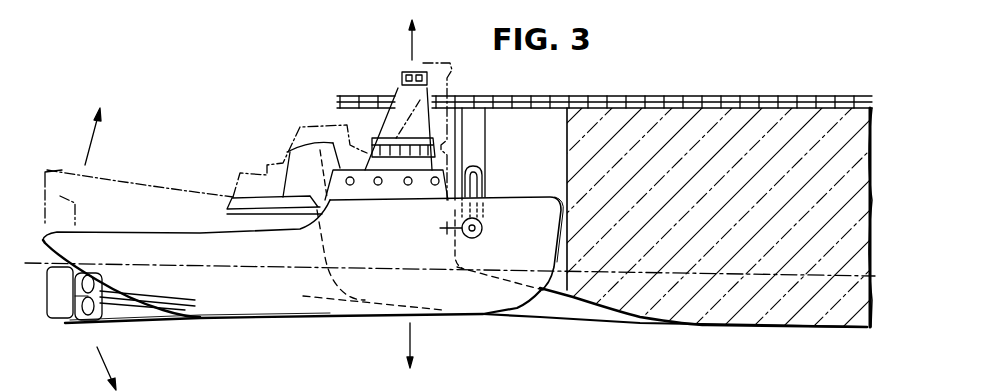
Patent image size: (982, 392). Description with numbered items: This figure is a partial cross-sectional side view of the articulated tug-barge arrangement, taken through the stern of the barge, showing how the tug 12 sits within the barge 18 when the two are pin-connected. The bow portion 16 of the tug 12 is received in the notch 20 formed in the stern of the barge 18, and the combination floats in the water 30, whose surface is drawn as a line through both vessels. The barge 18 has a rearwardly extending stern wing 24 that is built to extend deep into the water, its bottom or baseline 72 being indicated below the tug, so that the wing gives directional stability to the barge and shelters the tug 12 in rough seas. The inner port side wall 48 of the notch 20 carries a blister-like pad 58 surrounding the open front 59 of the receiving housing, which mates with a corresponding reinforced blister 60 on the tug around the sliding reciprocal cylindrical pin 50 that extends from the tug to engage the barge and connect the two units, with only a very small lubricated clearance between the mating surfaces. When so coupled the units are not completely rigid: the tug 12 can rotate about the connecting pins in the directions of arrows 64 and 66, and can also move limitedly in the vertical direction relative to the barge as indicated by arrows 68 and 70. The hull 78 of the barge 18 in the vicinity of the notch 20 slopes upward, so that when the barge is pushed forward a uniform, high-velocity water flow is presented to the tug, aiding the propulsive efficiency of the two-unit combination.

The tug 12 is at (263, 303).
The bow portion 16 is at (560, 198).
The barge 18 is at (813, 117).
The notch 20 is at (567, 127).
The stern wing 24 is at (333, 107).
The water 30 is at (178, 260).
The inner port side wall 48 is at (515, 112).
The sliding reciprocal cylindrical pin 50 is at (481, 232).
The blister-like pad 58 is at (477, 170).
The open front 59 is at (472, 190).
The blister 60 is at (437, 233).
The arrow 64 is at (89, 139).
The arrow 66 is at (101, 358).
The arrow 68 is at (410, 42).
The arrow 70 is at (411, 344).
The bottom or baseline of stern wing 72 is at (372, 305).
The hull 78 is at (541, 317).